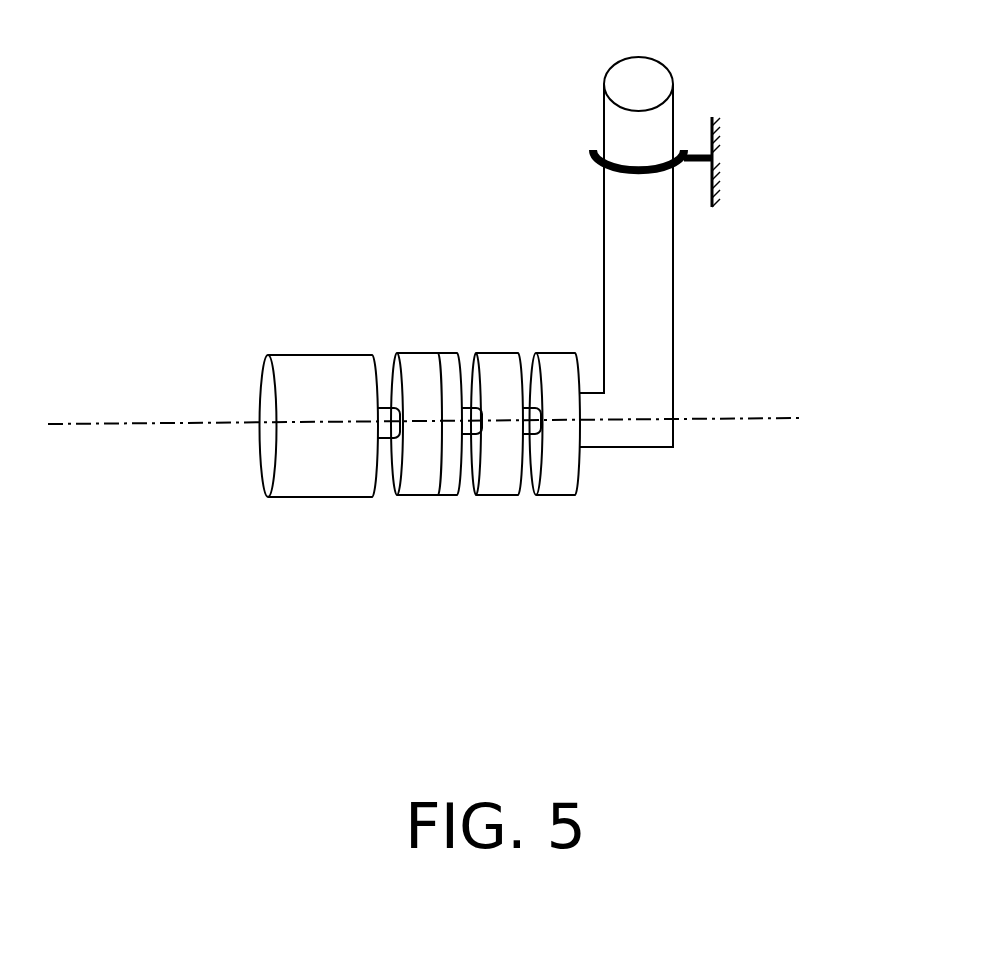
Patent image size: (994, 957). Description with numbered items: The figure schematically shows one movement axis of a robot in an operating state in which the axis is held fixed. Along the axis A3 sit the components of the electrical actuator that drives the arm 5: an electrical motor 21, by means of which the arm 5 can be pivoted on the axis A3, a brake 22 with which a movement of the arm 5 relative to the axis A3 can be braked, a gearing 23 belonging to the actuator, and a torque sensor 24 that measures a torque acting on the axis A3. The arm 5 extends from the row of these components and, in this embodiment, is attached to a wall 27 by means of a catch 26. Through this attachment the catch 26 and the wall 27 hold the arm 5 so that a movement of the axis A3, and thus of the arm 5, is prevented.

The arm 5 is at (648, 315).
The motor 21 is at (292, 475).
The brake 22 is at (407, 470).
The gearing 23 is at (506, 470).
The torque sensor 24 is at (564, 475).
The catch 26 is at (590, 160).
The wall 27 is at (714, 172).
The movement axis A3 is at (758, 420).